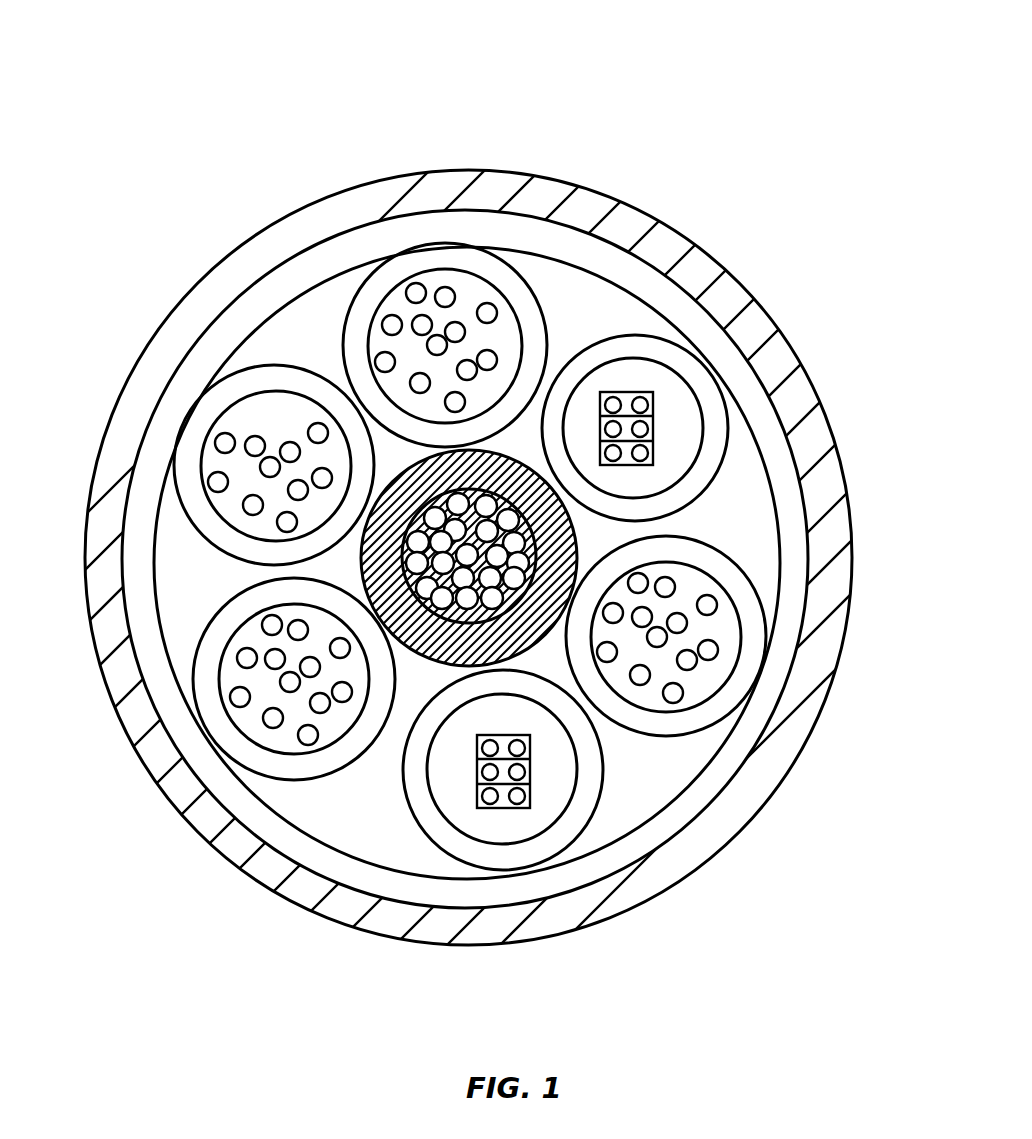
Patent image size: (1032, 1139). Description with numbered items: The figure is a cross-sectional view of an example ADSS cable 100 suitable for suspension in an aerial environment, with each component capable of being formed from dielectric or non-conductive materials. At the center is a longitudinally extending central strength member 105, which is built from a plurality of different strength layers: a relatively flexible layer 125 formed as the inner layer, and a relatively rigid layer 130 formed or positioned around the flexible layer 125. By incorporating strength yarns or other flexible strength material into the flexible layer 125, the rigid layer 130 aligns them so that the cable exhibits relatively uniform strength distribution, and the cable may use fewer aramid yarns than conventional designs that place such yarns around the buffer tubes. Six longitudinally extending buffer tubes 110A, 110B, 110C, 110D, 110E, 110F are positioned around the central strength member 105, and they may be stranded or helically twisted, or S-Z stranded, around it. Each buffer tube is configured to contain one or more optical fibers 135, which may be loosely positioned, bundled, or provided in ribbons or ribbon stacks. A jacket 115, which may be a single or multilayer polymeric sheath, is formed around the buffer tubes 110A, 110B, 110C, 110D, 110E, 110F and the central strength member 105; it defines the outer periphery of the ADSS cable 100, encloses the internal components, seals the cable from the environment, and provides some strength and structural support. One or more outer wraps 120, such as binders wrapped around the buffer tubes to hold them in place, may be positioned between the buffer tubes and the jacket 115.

The ADSS cable 100 is at (185, 58).
The central strength member 105 is at (473, 424).
The buffer tube 110A is at (510, 259).
The buffer tube 110B is at (730, 423).
The buffer tube 110C is at (695, 728).
The buffer tube 110D is at (405, 807).
The buffer tube 110E is at (253, 778).
The buffer tube 110F is at (258, 367).
The jacket 115 is at (415, 170).
The outer wrap 120 is at (617, 258).
The flexible layer 125 is at (468, 550).
The rigid layer 130 is at (276, 386).
The optical fibers 135 is at (428, 316).